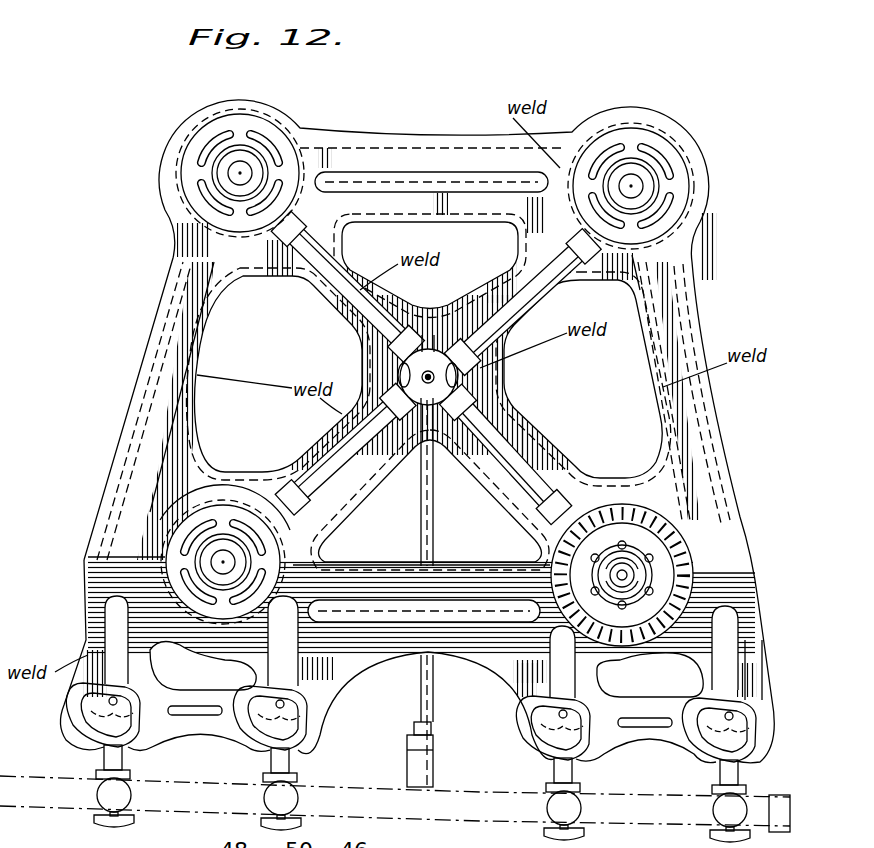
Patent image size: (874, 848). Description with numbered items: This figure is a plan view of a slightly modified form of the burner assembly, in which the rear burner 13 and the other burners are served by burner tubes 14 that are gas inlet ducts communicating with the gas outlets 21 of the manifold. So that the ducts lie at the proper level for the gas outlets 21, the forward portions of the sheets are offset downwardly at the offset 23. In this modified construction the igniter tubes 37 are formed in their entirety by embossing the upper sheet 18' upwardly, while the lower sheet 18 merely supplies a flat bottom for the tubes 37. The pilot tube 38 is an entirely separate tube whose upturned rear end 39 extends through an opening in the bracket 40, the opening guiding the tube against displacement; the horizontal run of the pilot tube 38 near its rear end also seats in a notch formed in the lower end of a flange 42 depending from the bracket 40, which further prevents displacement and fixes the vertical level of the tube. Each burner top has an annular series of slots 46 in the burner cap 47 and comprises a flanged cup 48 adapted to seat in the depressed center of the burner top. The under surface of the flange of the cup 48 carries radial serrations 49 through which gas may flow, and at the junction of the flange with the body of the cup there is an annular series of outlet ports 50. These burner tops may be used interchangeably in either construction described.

The rear burner 13 is at (530, 775).
The burner tube 14 is at (117, 653).
The lower unitary sheet 18 is at (417, 431).
The upper sheet 18' is at (711, 370).
The gas outlet 21 is at (125, 762).
The offset 23 is at (84, 650).
The igniter tube 37 is at (327, 270).
The pilot tube 38 is at (433, 535).
The upturned rear end 39 is at (402, 372).
The bracket 40 is at (458, 376).
The flange 42 is at (426, 395).
The slots 46 is at (262, 153).
The burner cap 47 is at (183, 176).
The flanged cup 48 is at (652, 590).
The radial serrations 49 is at (652, 550).
The outlet ports 50 is at (562, 556).